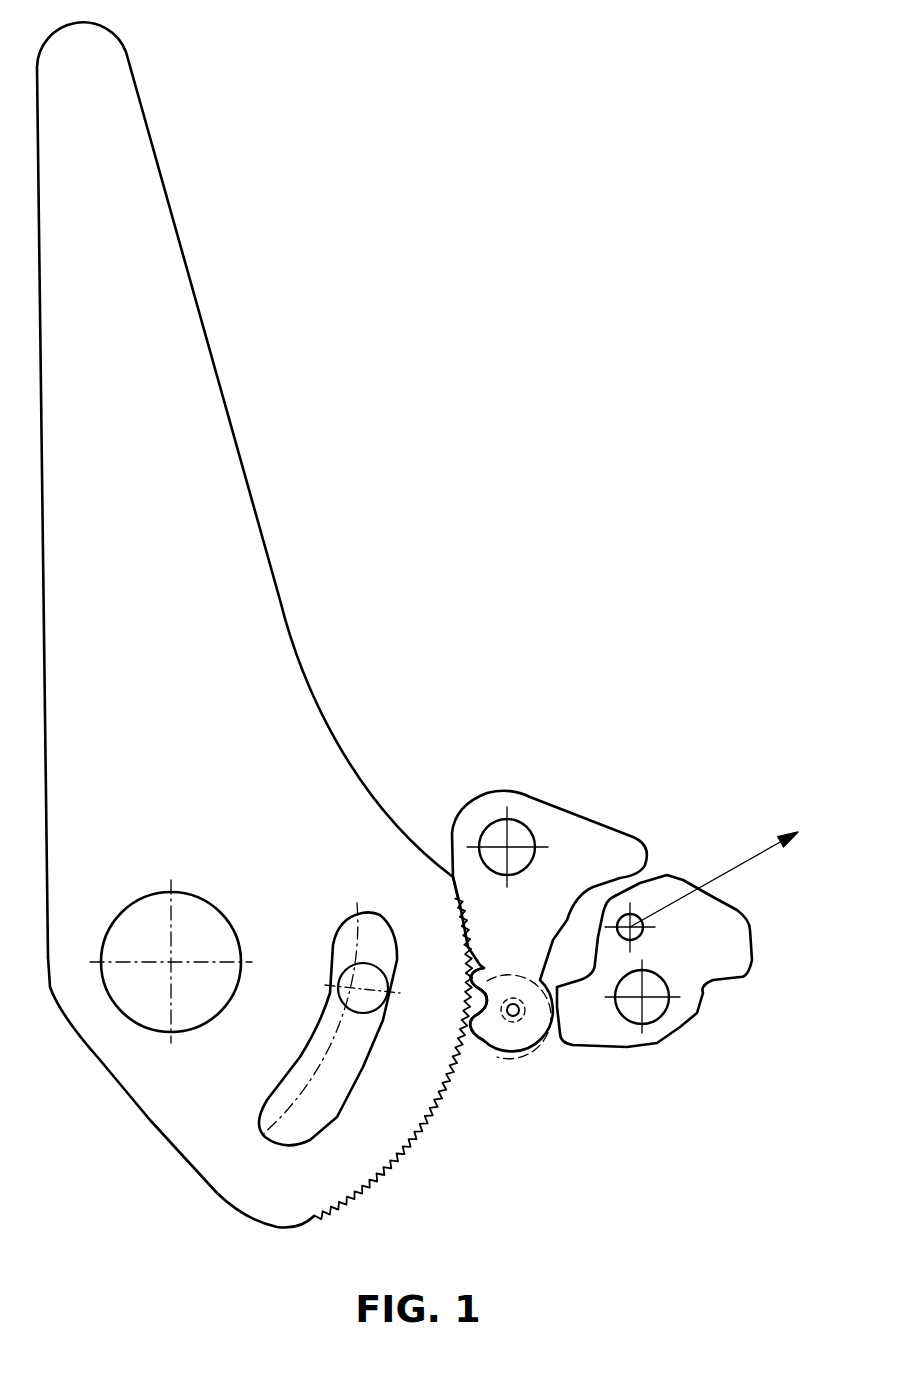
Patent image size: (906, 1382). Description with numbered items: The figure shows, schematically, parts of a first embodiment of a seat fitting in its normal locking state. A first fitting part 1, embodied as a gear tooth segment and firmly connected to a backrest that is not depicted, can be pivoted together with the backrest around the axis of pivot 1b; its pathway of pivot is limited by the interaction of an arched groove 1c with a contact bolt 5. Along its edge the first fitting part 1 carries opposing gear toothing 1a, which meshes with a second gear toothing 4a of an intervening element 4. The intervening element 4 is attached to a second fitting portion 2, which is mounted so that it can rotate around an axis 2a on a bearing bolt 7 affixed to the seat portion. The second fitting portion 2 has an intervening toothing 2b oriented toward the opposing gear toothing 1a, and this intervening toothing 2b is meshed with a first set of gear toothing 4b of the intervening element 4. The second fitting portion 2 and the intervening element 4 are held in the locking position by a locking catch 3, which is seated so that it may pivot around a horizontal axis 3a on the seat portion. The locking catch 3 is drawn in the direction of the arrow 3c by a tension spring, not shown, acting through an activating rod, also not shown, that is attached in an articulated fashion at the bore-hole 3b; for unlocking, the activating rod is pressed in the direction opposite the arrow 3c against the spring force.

The first fitting part 1 is at (254, 624).
The opposing gear toothing 1a is at (367, 1185).
The axis of pivot 1b is at (175, 958).
The arched groove 1c is at (348, 1107).
The second fitting portion 2 is at (527, 941).
The axis 2a is at (508, 847).
The intervening toothing 2b is at (460, 1060).
The locking catch 3 is at (677, 940).
The horizontal axis 3a is at (668, 1030).
The bore-hole 3b is at (643, 930).
The arrow 3c is at (713, 873).
The intervening element 4 is at (477, 990).
The second gear toothing 4a is at (457, 1010).
The first set of gear toothing 4b is at (505, 975).
The contact bolt 5 is at (375, 960).
The bearing bolt 7 is at (492, 822).